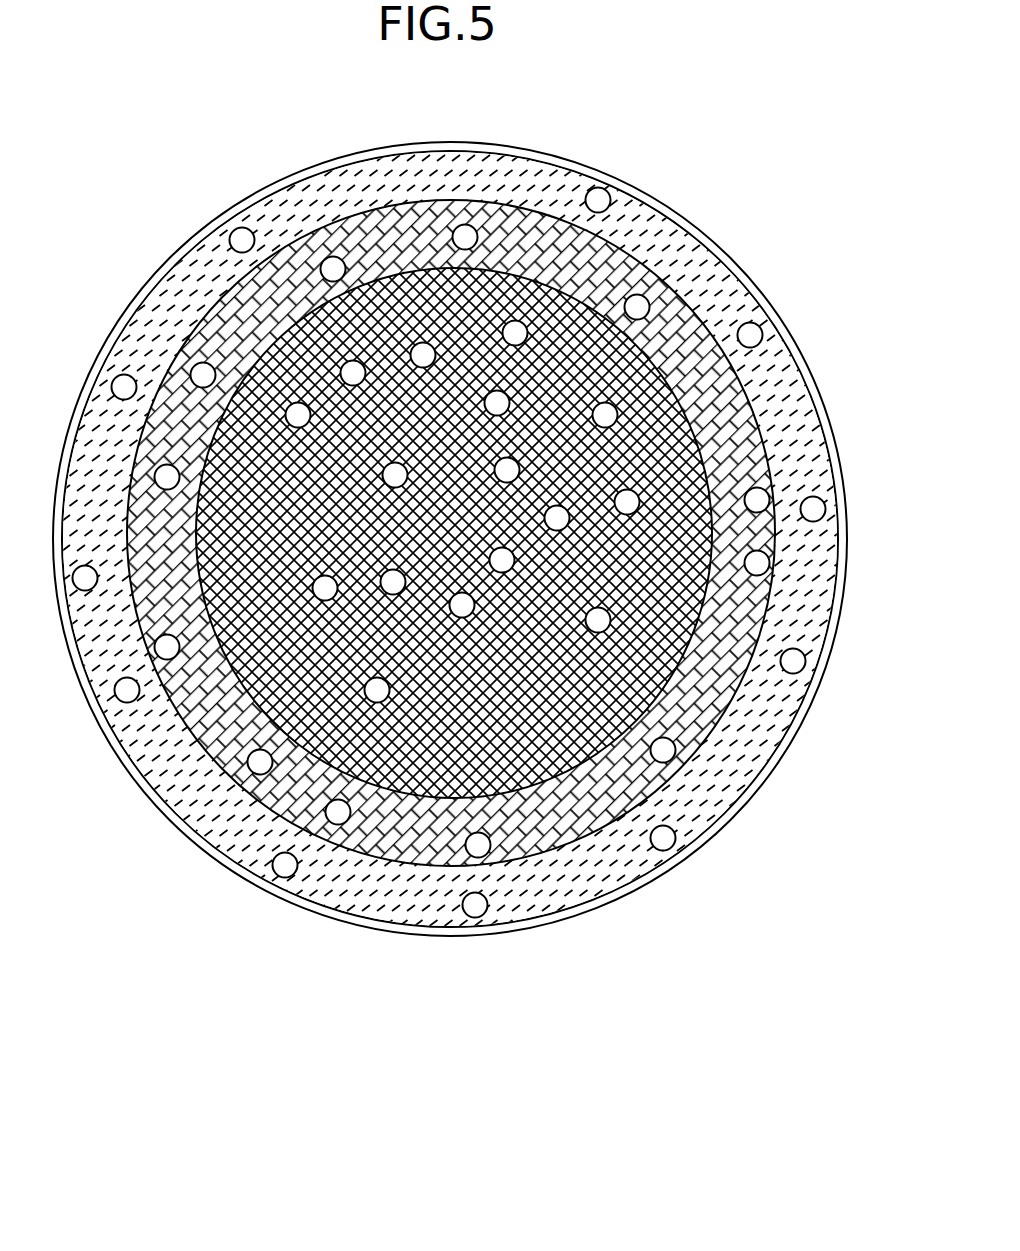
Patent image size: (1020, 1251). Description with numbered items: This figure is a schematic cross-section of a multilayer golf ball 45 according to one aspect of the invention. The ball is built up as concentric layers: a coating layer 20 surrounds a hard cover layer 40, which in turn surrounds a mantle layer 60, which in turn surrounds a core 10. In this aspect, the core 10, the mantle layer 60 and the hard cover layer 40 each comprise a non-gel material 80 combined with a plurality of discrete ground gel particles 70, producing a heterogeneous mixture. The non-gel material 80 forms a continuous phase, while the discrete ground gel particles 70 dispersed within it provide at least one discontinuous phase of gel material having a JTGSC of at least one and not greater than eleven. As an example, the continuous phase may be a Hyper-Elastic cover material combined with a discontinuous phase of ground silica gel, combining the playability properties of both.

The core 10 is at (278, 655).
The coating layer 20 is at (357, 918).
The hard cover layer 40 is at (510, 908).
The multilayer golf ball 45 is at (482, 577).
The mantle layer 60 is at (427, 848).
The discrete ground gel particles 70 is at (606, 622).
The non-gel material 80 is at (615, 712).